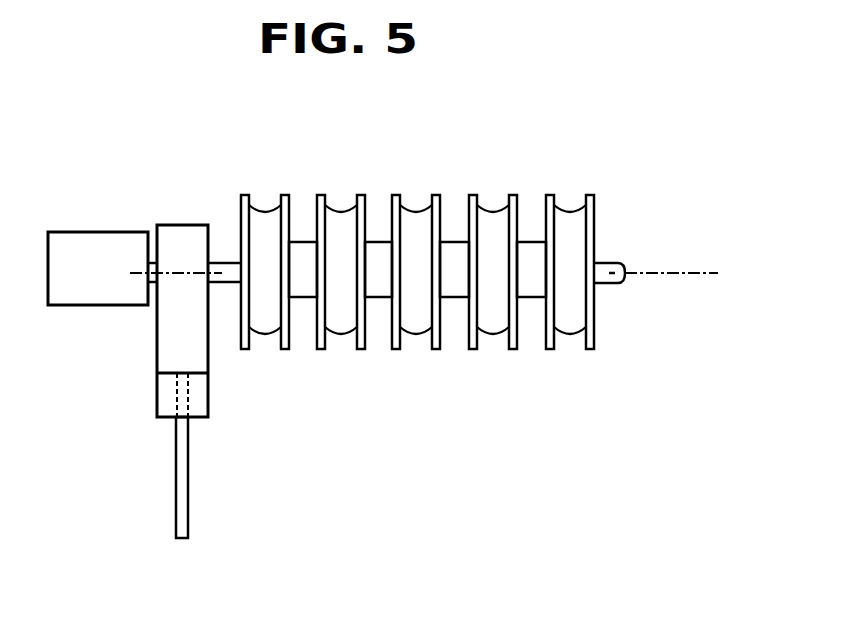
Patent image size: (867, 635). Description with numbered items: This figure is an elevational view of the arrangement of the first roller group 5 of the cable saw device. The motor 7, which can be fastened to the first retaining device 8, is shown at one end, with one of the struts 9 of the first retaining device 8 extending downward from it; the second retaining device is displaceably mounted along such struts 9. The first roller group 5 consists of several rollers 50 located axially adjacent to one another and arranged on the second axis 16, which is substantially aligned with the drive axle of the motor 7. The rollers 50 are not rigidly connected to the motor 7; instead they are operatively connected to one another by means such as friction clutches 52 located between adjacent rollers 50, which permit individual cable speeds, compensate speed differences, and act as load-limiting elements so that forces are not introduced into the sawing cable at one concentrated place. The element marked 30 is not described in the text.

The first roller group 5 is at (648, 219).
The motor 7 is at (96, 305).
The first retaining device 8 is at (157, 398).
The struts 9 is at (176, 478).
The second axis 16 is at (648, 273).
The pulley assembly 30 is at (412, 450).
The rollers 50 is at (269, 199).
The friction clutches 52 is at (302, 233).